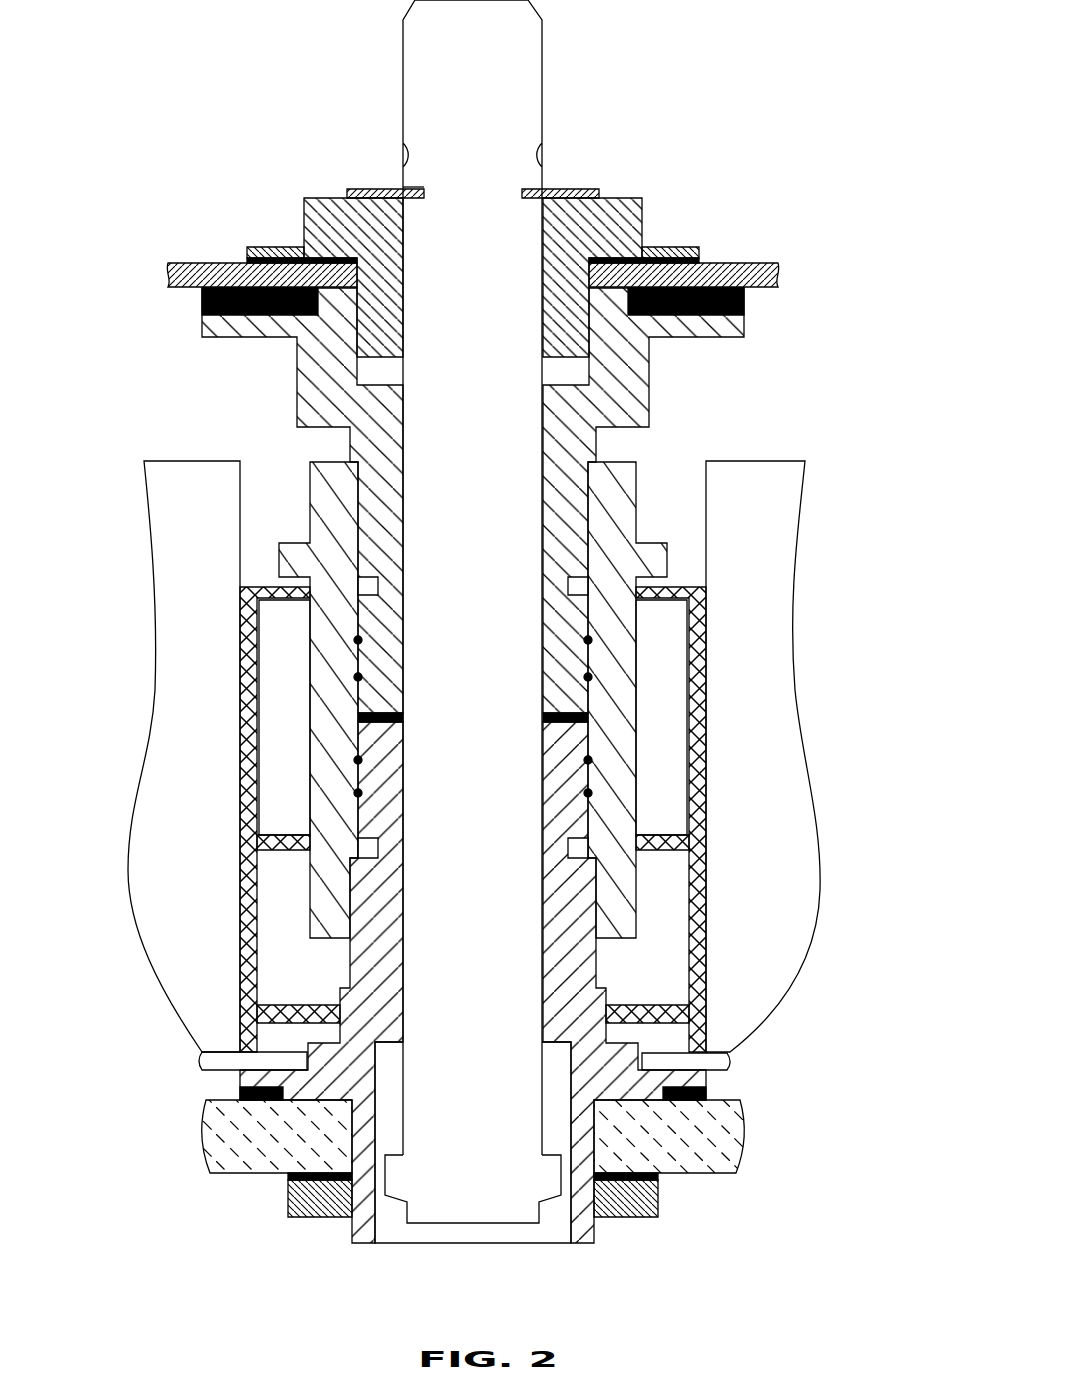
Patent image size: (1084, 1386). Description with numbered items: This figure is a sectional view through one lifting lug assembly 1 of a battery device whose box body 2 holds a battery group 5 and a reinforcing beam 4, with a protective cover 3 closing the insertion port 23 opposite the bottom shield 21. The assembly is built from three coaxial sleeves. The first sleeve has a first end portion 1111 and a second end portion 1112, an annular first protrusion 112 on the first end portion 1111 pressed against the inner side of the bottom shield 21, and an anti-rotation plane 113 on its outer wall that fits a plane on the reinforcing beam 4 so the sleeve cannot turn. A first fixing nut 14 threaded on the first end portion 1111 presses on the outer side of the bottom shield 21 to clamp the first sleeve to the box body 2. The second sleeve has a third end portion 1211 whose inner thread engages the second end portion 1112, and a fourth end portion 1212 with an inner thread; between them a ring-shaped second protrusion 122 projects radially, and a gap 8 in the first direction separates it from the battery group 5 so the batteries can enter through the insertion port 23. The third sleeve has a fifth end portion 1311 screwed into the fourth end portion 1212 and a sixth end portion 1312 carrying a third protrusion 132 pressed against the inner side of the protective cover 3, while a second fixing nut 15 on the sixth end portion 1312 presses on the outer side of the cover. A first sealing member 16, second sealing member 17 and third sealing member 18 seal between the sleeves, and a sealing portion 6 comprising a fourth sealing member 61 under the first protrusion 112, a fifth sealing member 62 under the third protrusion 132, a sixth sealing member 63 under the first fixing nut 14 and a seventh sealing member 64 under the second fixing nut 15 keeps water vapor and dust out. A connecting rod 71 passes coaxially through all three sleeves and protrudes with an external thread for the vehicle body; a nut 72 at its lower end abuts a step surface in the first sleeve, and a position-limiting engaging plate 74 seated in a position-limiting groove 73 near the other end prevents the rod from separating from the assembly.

The lifting lug assembly 1 is at (504, 643).
The connecting rod 71 is at (522, 99).
The nut 72 is at (500, 1205).
The position-limiting groove 73 is at (410, 188).
The position-limiting engaging plate 74 is at (383, 190).
The second fixing nut 15 is at (612, 236).
The protective cover 3 is at (748, 266).
The insertion port 23 is at (822, 308).
The seventh sealing member 64 is at (300, 252).
The fifth sealing member 62 is at (220, 298).
The fourth sealing member 61 is at (240, 1090).
The sixth sealing member 63 is at (632, 1205).
The sealing portion 6 is at (907, 371).
The third protrusion 132 is at (712, 322).
The sixth end portion 1312 is at (485, 500).
The fifth end portion 1311 is at (485, 500).
The gap 8 is at (257, 568).
The second protrusion 122 is at (290, 556).
The battery group 5 is at (180, 532).
The fourth end portion 1212 is at (370, 700).
The third end portion 1211 is at (370, 700).
The second sealing member 17 is at (700, 606).
The third sealing member 18 is at (690, 690).
The first sealing member 16 is at (640, 748).
The second end portion 1112 is at (568, 830).
The reinforcing beam 4 is at (544, 819).
The first end portion 1111 is at (561, 982).
The anti-rotation plane 113 is at (612, 1012).
The first protrusion 112 is at (660, 1078).
The first fixing nut 14 is at (288, 1198).
The bottom shield 21 is at (473, 1157).
The box body 2 is at (697, 1178).